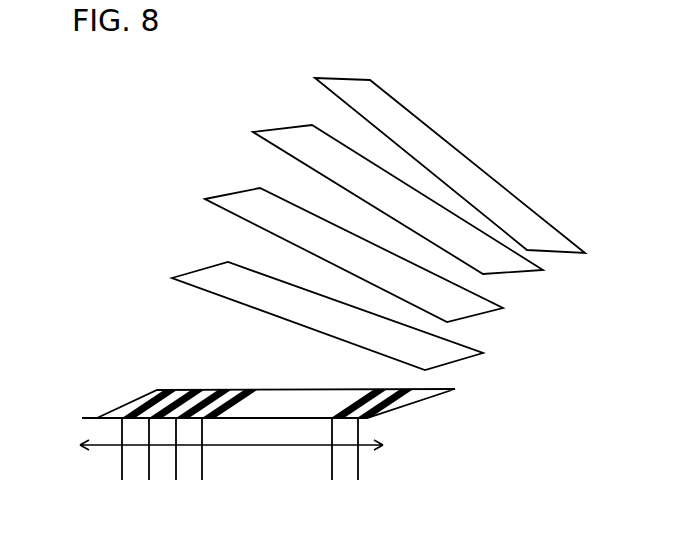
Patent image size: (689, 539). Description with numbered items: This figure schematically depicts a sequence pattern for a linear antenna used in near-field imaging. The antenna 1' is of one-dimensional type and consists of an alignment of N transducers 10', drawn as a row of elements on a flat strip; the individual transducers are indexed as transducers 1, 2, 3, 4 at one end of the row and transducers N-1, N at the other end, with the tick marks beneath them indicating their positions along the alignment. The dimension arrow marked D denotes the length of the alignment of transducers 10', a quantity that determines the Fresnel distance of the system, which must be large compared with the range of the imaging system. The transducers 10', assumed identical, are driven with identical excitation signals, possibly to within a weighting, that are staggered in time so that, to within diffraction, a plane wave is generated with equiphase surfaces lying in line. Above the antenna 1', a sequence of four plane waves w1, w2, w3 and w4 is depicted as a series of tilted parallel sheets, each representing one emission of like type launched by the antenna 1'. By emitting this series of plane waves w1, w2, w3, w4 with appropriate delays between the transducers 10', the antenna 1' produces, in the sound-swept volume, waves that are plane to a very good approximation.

The plane wave w1 is at (415, 127).
The plane wave w2 is at (318, 149).
The plane wave w3 is at (249, 205).
The plane wave w4 is at (195, 275).
The transducers 10' is at (343, 347).
The antenna 1' is at (241, 385).
The length of the alignment of transducers D is at (231, 460).
The transducer 1 is at (119, 468).
The transducer 2 is at (147, 468).
The transducer 3 is at (174, 468).
The transducer 4 is at (200, 468).
The transducer N-1 is at (319, 468).
The transducer N is at (360, 468).